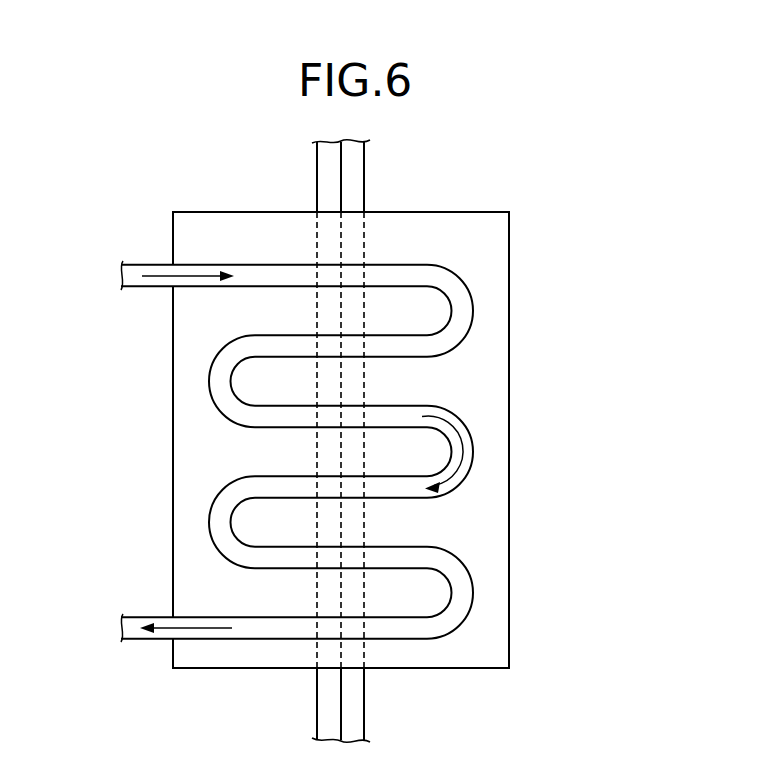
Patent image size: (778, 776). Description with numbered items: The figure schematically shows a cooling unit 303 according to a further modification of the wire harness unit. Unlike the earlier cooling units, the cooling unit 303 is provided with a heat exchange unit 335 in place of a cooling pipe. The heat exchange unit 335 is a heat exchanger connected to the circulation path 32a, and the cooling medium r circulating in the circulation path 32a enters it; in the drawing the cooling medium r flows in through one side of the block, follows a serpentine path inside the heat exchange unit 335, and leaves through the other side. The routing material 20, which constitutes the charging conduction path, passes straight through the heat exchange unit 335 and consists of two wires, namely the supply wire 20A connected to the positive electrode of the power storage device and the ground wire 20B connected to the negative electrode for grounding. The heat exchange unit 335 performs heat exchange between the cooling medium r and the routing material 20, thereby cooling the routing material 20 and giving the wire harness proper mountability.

The heat exchange unit 335 is at (374, 399).
The cooling unit 303 is at (508, 158).
The routing material 20 is at (280, 441).
The supply wire 20A is at (330, 183).
The ground wire 20B is at (353, 152).
The circulation path 32a is at (135, 264).
The cooling medium r is at (160, 278).